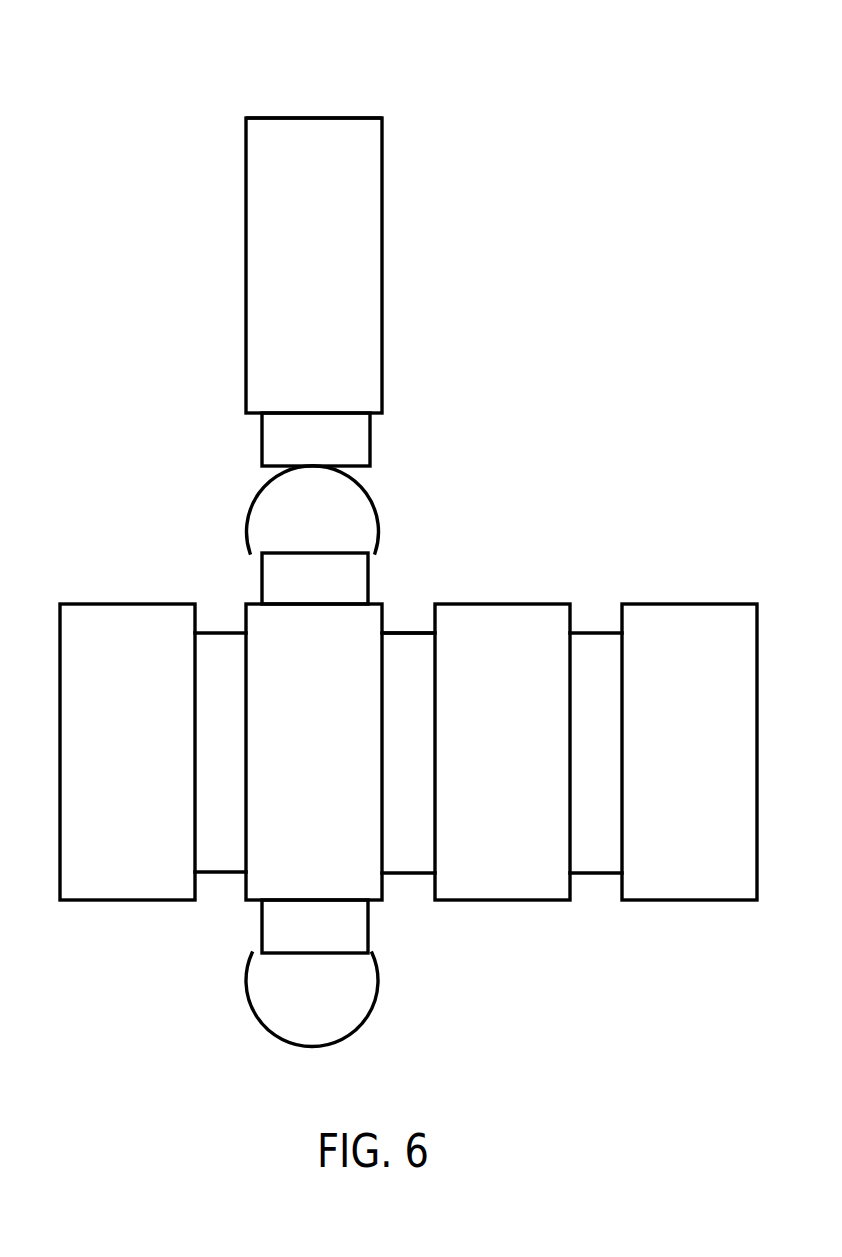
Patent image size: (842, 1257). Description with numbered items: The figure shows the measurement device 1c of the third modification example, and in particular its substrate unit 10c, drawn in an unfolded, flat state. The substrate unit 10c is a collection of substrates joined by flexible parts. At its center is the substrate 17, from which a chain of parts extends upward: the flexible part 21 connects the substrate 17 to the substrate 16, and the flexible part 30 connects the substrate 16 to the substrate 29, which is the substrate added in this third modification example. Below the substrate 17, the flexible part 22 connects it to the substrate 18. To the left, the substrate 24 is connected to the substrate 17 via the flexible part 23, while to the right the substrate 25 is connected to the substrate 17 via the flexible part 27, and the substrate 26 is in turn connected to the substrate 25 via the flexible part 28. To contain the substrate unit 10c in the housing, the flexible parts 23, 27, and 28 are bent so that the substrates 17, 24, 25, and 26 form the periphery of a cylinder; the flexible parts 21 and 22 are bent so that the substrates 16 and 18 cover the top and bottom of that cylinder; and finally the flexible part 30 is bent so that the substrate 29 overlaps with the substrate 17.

The measurement device 1c is at (643, 163).
The substrate unit 10c is at (320, 118).
The substrate 29 is at (343, 297).
The flexible part 30 is at (370, 437).
The substrate 16 is at (348, 500).
The flexible part 21 is at (356, 573).
The substrate 17 is at (350, 623).
The flexible part 22 is at (262, 936).
The substrate 18 is at (350, 1012).
The substrate 24 is at (87, 662).
The flexible part 23 is at (228, 660).
The substrate 25 is at (522, 630).
The flexible part 27 is at (408, 830).
The substrate 26 is at (688, 630).
The flexible part 28 is at (593, 842).